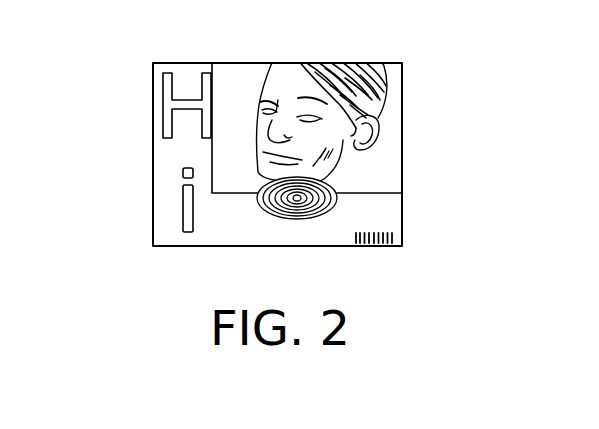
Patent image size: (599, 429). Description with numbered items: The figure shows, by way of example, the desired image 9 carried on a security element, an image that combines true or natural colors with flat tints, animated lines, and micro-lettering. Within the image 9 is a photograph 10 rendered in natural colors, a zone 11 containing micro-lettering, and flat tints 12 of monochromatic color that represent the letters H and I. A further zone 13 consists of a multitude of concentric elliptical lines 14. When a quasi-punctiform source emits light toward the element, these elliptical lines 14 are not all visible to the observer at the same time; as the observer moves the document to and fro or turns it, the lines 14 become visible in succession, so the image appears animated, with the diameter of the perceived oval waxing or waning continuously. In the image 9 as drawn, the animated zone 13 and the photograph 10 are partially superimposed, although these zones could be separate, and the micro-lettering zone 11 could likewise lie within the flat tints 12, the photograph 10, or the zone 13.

The desired image 9 is at (289, 50).
The photograph 10 is at (376, 96).
The zone with micro-lettering 11 is at (372, 251).
The flat tints 12 is at (176, 207).
The zone of concentric elliptical lines 13 is at (368, 210).
The concentric elliptical lines 14 is at (267, 221).